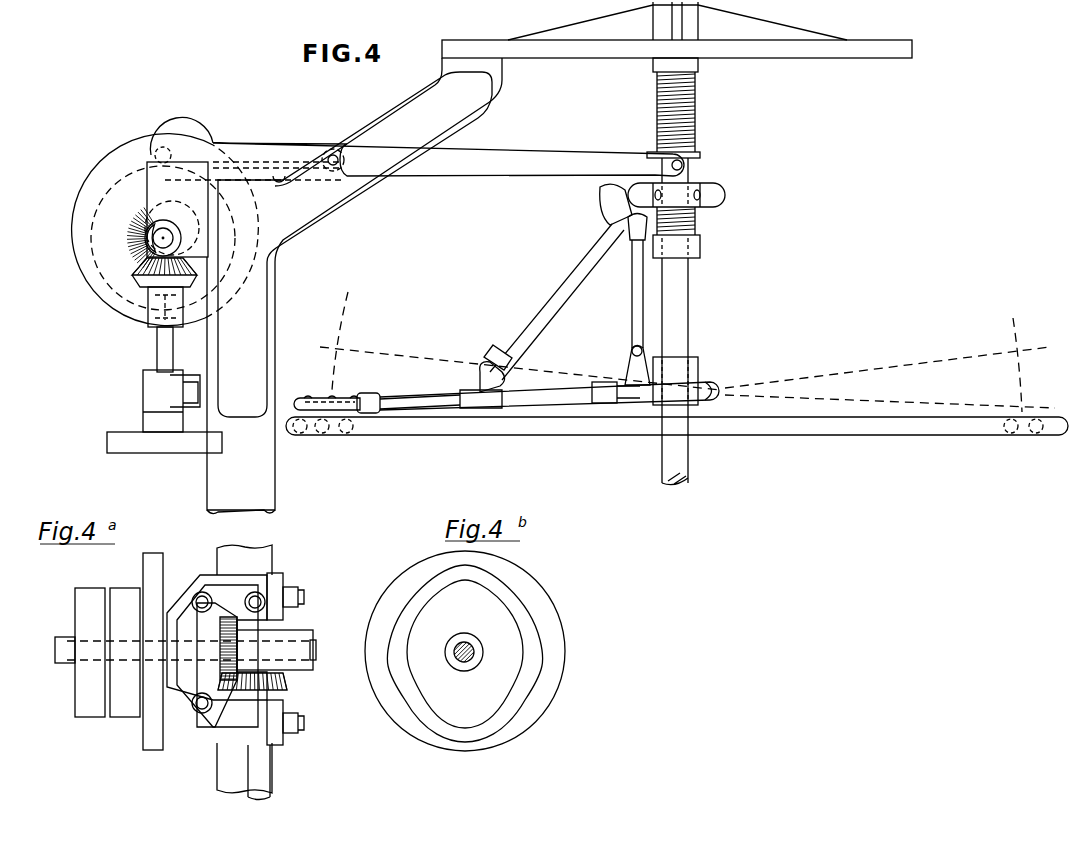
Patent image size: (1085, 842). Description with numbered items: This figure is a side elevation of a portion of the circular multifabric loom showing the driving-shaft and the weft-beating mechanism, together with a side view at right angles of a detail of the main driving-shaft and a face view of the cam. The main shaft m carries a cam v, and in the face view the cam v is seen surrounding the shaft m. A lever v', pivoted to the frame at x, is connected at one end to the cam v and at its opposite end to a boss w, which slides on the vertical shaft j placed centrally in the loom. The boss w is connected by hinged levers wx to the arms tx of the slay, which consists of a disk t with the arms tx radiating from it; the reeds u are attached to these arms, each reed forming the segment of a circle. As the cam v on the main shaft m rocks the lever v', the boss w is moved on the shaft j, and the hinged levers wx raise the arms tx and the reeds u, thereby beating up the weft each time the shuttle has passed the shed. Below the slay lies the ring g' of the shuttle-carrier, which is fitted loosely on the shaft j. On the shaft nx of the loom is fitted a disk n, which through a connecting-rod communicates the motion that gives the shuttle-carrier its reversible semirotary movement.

In FIG. 4, the cam v is at (142, 230).
In FIG. 4A, the cam v is at (119, 654).
In FIG. 4B, the cam v is at (473, 651).
In FIG. 4, the pivot x is at (331, 152).
In FIG. 4, the lever v' is at (417, 149).
In FIG. 4, the boss w is at (722, 199).
In FIG. 4, the hinged levers wx is at (630, 315).
In FIG. 4, the vertical shaft j is at (682, 315).
In FIG. 4, the disk t is at (710, 377).
In FIG. 4, the arms tx is at (408, 395).
In FIG. 4, the reeds u is at (320, 393).
In FIG. 4, the ring g' is at (677, 442).
In FIG. 4, the shaft nx is at (160, 350).
In FIG. 4A, the shaft nx is at (257, 775).
In FIG. 4, the disk n is at (118, 443).
In FIG. 4A, the main shaft m is at (93, 653).
In FIG. 4B, the main shaft m is at (478, 648).